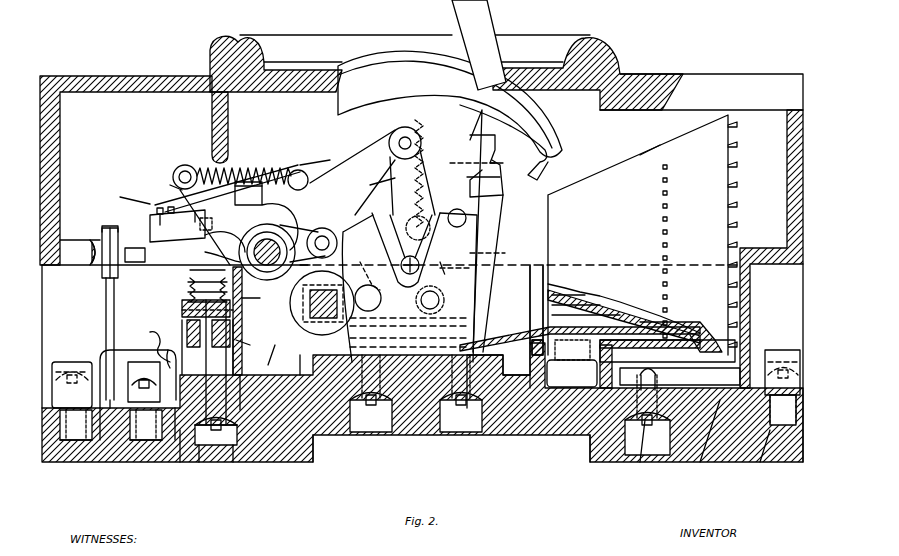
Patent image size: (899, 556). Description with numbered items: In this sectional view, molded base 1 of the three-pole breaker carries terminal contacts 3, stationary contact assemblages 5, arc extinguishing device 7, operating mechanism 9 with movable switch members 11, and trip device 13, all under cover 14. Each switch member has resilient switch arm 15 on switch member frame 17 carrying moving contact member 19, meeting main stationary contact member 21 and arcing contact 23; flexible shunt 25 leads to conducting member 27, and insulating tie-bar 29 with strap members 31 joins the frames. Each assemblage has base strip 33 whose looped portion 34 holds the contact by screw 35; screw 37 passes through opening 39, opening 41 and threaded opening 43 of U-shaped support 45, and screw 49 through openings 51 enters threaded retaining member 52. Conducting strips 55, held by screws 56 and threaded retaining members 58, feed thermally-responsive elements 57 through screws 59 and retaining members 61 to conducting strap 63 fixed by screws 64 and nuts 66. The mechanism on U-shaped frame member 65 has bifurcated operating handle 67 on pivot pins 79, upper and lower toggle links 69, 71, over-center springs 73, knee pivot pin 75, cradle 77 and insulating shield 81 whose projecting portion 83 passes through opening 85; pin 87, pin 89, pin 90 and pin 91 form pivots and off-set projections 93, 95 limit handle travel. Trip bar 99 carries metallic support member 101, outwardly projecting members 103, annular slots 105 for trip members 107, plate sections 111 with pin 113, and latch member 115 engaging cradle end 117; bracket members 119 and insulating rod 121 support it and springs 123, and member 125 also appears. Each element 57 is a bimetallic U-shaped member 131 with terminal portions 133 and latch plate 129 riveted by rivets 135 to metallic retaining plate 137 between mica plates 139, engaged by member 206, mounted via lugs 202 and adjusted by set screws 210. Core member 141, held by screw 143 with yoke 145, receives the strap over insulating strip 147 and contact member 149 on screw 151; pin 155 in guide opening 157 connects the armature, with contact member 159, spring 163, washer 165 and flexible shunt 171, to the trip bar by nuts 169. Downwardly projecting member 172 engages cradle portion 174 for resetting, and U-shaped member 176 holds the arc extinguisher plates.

The base 1 is at (558, 432).
The terminal contacts 3 is at (64, 360).
The stationary contact assemblages 5 is at (718, 381).
The arc extinguishing device 7 is at (636, 208).
The circuit breaker operating mechanism 9 is at (318, 134).
The movable switch members 11 is at (502, 298).
The trip device 13 is at (124, 191).
The cover 14 is at (648, 74).
The resilient switch arm 15 is at (514, 325).
The switch member frame 17 is at (370, 271).
The moving contact member 19 is at (610, 330).
The main stationary contact member 21 is at (575, 330).
The arcing contact 23 is at (668, 327).
The flexible shunt 25 is at (498, 379).
The conducting member 27 is at (330, 400).
The insulating tie-bar 29 is at (325, 320).
The strap member 31 is at (345, 258).
The base strip 33 is at (714, 462).
The looped portion 34 is at (552, 375).
The screw 35 is at (580, 338).
The screw 37 is at (612, 455).
The opening 39 is at (700, 440).
The opening 41 is at (609, 366).
The threaded opening 43 is at (684, 340).
The U-shaped support 45 is at (670, 345).
The screw 49 is at (772, 352).
The openings 51 is at (798, 386).
The threaded retaining member 52 is at (762, 462).
The conducting strips 55 is at (108, 462).
The screws 56 is at (90, 360).
The thermally-responsive elements 57 is at (80, 236).
The threaded retaining members 58 is at (64, 462).
The screw 59 is at (140, 360).
The retaining members 61 is at (182, 440).
The conducting strap 63 is at (183, 462).
The screws 64 is at (277, 350).
The U-shaped frame member 65 is at (488, 240).
The nuts 66 is at (300, 462).
The bifurcated operating handle 67 is at (373, 175).
The upper toggle link 69 is at (388, 160).
The lower toggle link 71 is at (494, 253).
The over-center springs 73 is at (479, 164).
The knee pivot pin 75 is at (398, 225).
The cradle 77 is at (385, 140).
The pivot pins 79 is at (455, 268).
The insulating shield 81 is at (396, 75).
The projecting portion 83 is at (490, 15).
The opening 85 is at (362, 62).
The pin 87 is at (381, 298).
The pin 89 is at (442, 300).
The pin 90 is at (405, 137).
The pin 91 is at (467, 218).
The off-set projection 93 is at (350, 226).
The off-set projection 95 is at (500, 205).
The trip bar 99 is at (250, 220).
The metallic support member 101 is at (300, 220).
The outwardly projecting members 103 is at (195, 250).
The annular slots 105 is at (245, 228).
The trip members 107 is at (172, 203).
The plate sections 111 is at (375, 187).
The pin 113 is at (274, 252).
The latch member 115 is at (268, 170).
The end 117 is at (298, 170).
The bracket members 119 is at (172, 184).
The insulating rod 121 is at (187, 165).
The springs 123 is at (245, 170).
The member 125 is at (259, 295).
The latch plate 129 is at (112, 278).
The U-shaped member 131 is at (114, 312).
The terminal portions 133 is at (150, 440).
The rivets 135 is at (92, 252).
The metallic retaining plate 137 is at (106, 283).
The mica plates 139 is at (106, 228).
The core member 141 is at (250, 462).
The screw 143 is at (216, 450).
The yoke 145 is at (187, 318).
The strip 147 is at (200, 446).
The contact member 149 is at (252, 343).
The screw 151 is at (174, 357).
The pin 155 is at (190, 272).
The guide opening 157 is at (242, 307).
The contact member 159 is at (242, 326).
The spring 163 is at (182, 305).
The washer 165 is at (188, 284).
The nuts 169 is at (205, 227).
The flexible shunt 171 is at (150, 340).
The downwardly projecting member 172 is at (548, 165).
The portion 174 is at (478, 153).
The U-shaped member 176 is at (648, 155).
The lugs 202 is at (155, 218).
The engaging member 206 is at (142, 257).
The set screws 210 is at (157, 211).